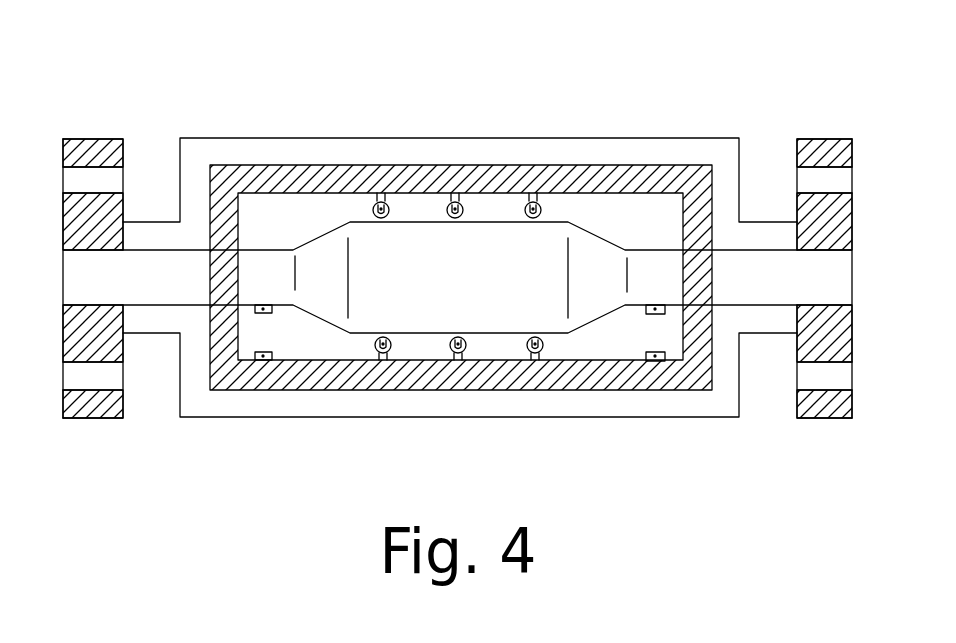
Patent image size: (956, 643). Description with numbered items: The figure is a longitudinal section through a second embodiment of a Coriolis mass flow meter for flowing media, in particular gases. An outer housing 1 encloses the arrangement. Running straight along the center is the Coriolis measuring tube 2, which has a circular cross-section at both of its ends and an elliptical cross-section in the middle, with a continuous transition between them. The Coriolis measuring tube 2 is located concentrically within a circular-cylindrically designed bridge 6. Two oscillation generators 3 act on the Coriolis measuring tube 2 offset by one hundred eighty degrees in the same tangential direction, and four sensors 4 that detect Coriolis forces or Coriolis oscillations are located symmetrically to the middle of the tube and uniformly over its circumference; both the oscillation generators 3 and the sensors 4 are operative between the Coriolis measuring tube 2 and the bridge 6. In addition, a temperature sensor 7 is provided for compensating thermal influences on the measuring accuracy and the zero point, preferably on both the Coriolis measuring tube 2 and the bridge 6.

The housing 1 is at (286, 138).
The Coriolis measuring tube 2 is at (607, 238).
The oscillation generator 3 is at (461, 336).
The sensor 4 is at (389, 336).
The bridge 6 is at (618, 178).
The temperature sensor 7 is at (271, 313).